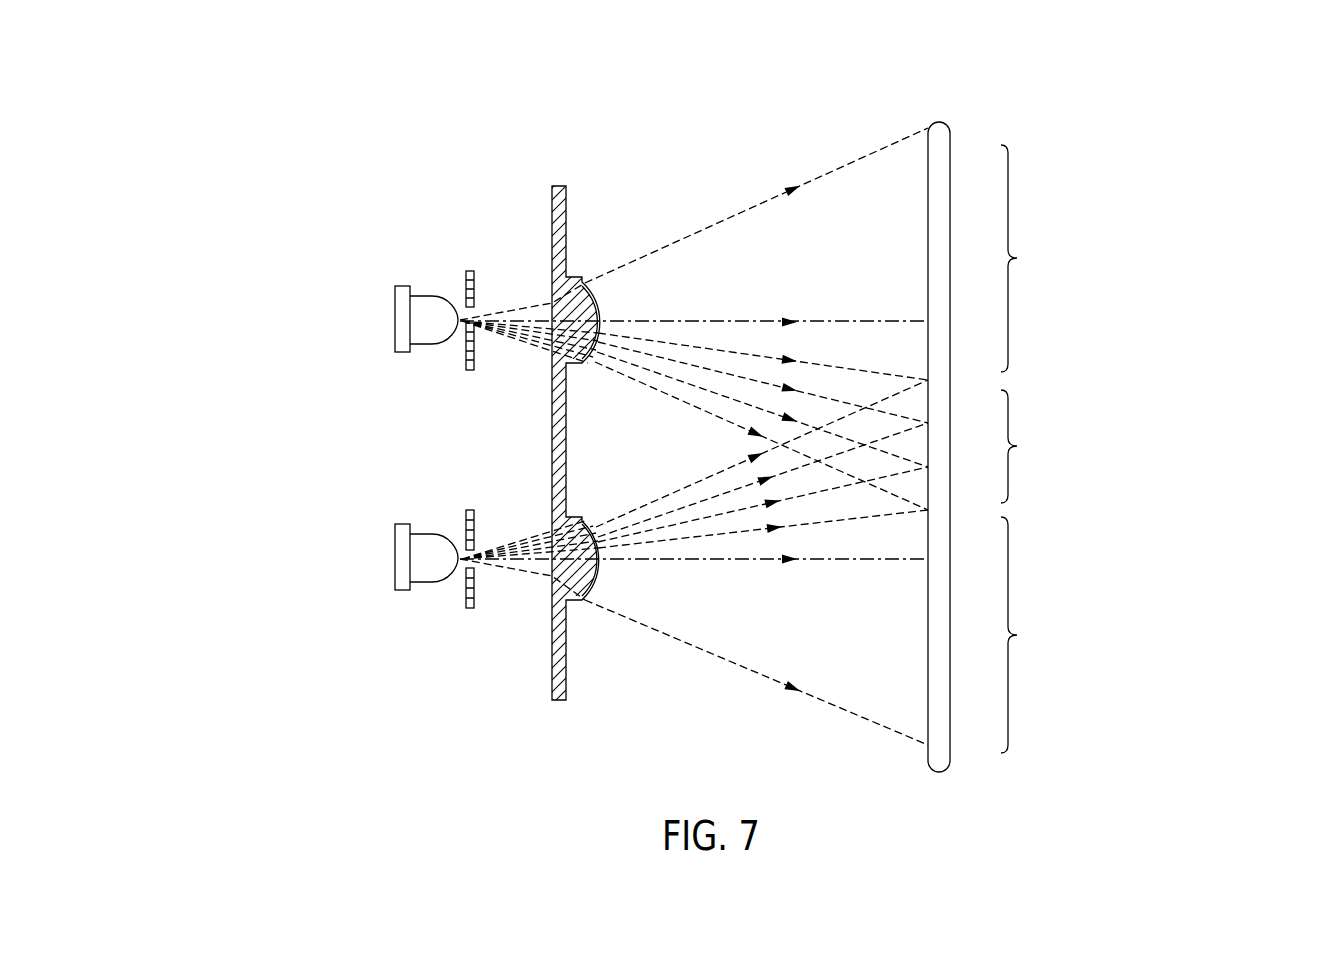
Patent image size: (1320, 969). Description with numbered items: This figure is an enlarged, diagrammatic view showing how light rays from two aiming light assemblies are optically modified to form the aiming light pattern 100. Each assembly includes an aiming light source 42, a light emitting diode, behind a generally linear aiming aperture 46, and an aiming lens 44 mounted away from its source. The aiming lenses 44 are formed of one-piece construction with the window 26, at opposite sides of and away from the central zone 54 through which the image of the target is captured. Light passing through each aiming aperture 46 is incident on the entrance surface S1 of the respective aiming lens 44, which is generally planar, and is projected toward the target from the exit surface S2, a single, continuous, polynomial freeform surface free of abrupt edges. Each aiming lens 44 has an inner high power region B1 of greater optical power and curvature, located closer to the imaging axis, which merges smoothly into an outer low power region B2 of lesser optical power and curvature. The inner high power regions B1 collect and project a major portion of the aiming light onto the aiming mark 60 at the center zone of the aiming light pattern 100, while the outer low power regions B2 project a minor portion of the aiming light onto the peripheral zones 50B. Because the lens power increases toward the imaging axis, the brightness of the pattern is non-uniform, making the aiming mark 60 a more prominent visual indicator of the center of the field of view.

The window 26 is at (556, 186).
The aiming light source 42 is at (395, 558).
The aiming lens 44 is at (599, 317).
The aiming aperture 46 is at (470, 508).
The peripheral zone 50B is at (928, 233).
The central zone 54 is at (567, 445).
The aiming mark 60 is at (940, 442).
The aiming light pattern 100 is at (940, 130).
The entrance surface S1 is at (556, 298).
The exit surface S2 is at (590, 302).
The inner high power region B1 is at (586, 361).
The outer low power region B2 is at (583, 282).